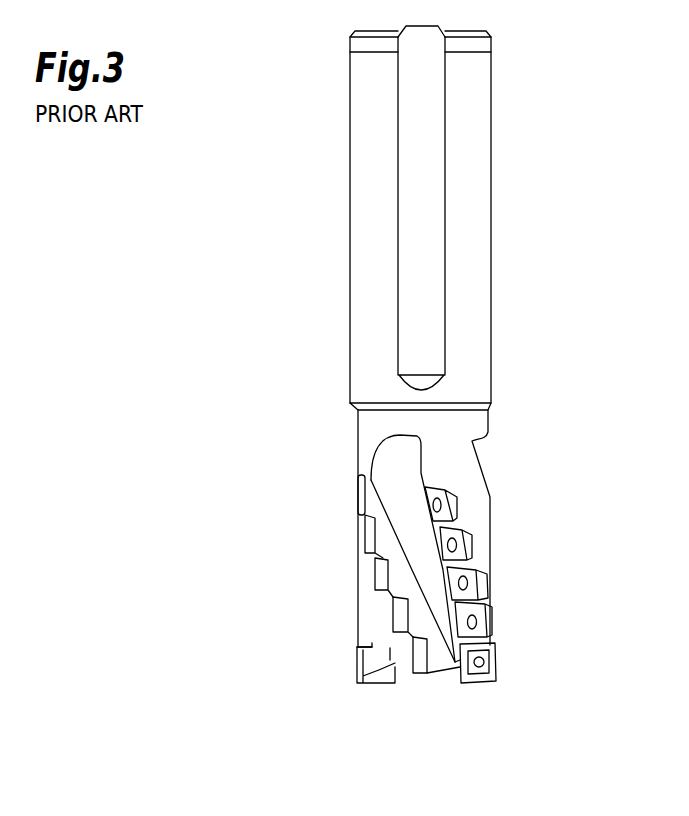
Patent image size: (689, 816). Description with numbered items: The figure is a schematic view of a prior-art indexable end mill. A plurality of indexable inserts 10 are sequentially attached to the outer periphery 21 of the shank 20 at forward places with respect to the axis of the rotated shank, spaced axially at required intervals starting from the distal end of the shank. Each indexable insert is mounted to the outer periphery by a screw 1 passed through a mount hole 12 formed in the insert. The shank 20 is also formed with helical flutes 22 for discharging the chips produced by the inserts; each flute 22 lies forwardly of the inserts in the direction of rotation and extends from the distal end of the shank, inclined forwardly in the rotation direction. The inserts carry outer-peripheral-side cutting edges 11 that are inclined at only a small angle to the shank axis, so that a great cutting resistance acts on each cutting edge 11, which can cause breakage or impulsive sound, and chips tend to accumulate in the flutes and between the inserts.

The screw 1 is at (490, 683).
The indexable insert 10 is at (472, 549).
The outer-peripheral-side cutting edge 11 is at (355, 666).
The mount hole 12 is at (485, 657).
The shank 20 is at (492, 235).
The outer periphery 21 is at (458, 424).
The helical flute 22 is at (388, 452).